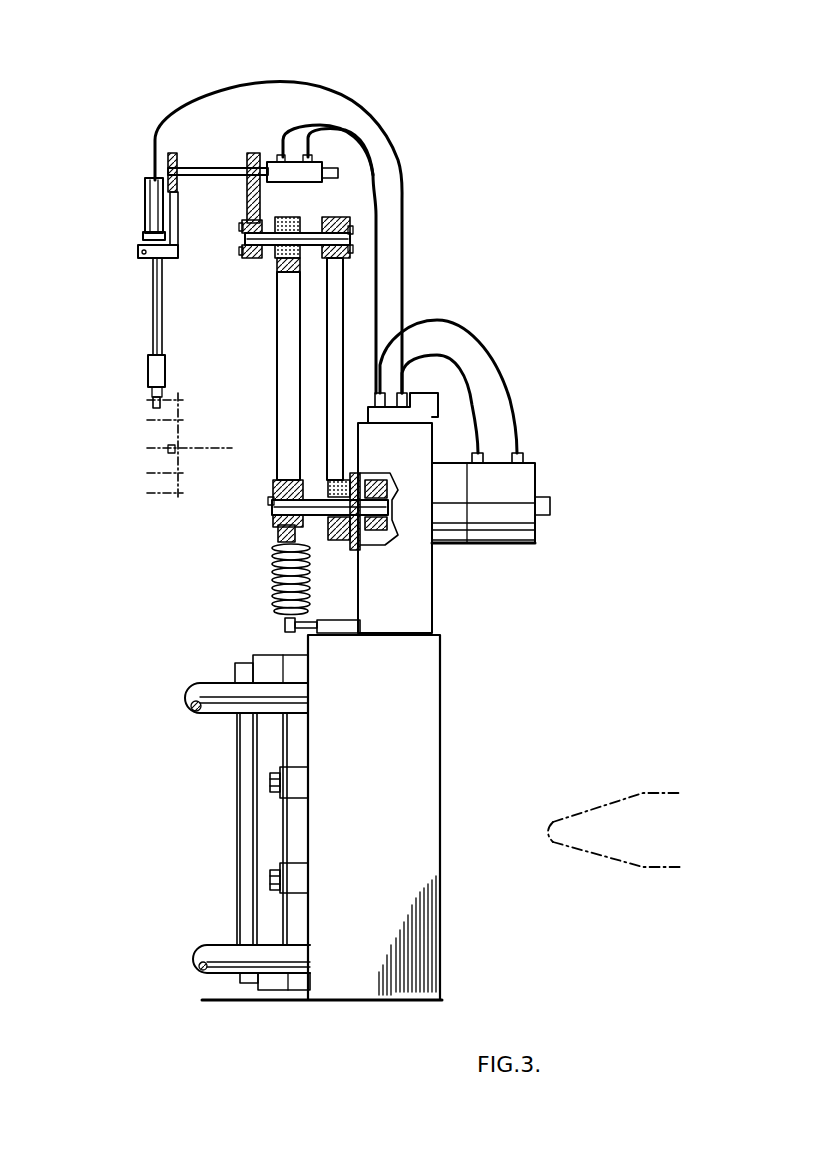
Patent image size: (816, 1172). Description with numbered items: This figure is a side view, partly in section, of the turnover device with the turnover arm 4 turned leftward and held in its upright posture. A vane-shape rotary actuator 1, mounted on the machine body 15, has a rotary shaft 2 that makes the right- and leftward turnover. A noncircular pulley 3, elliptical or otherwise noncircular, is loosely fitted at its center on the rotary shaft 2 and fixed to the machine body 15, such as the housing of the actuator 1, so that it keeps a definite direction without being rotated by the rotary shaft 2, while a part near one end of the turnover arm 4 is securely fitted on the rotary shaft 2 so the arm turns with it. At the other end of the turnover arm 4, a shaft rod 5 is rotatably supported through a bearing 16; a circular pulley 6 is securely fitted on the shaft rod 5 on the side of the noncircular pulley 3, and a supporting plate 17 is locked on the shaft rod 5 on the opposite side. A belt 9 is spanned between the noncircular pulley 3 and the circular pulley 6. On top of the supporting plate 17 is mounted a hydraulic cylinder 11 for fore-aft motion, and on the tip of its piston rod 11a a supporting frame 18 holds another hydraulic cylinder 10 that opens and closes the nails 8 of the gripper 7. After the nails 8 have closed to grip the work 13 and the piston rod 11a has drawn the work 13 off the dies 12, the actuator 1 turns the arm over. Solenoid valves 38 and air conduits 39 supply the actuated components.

The actuator 1 is at (545, 465).
The rotary shaft 2 is at (388, 523).
The noncircular pulley 3 is at (340, 540).
The turnover arm 4 is at (277, 360).
The shaft rod 5 is at (310, 233).
The circular pulley 6 is at (333, 255).
The gripper 7 is at (150, 372).
The nails 8 is at (152, 405).
The belt 9 is at (343, 368).
The hydraulic cylinder 10 is at (152, 325).
The hydraulic cylinder 11 is at (293, 162).
The piston rod 11a is at (208, 168).
The dies 12 is at (236, 823).
The work 13 is at (163, 455).
The machine body 15 is at (440, 612).
The bearing 16 is at (275, 258).
The supporting plate 17 is at (257, 258).
The supporting frame 18 is at (176, 250).
The solenoid valves 38 is at (438, 350).
The air conduits 39 is at (376, 135).